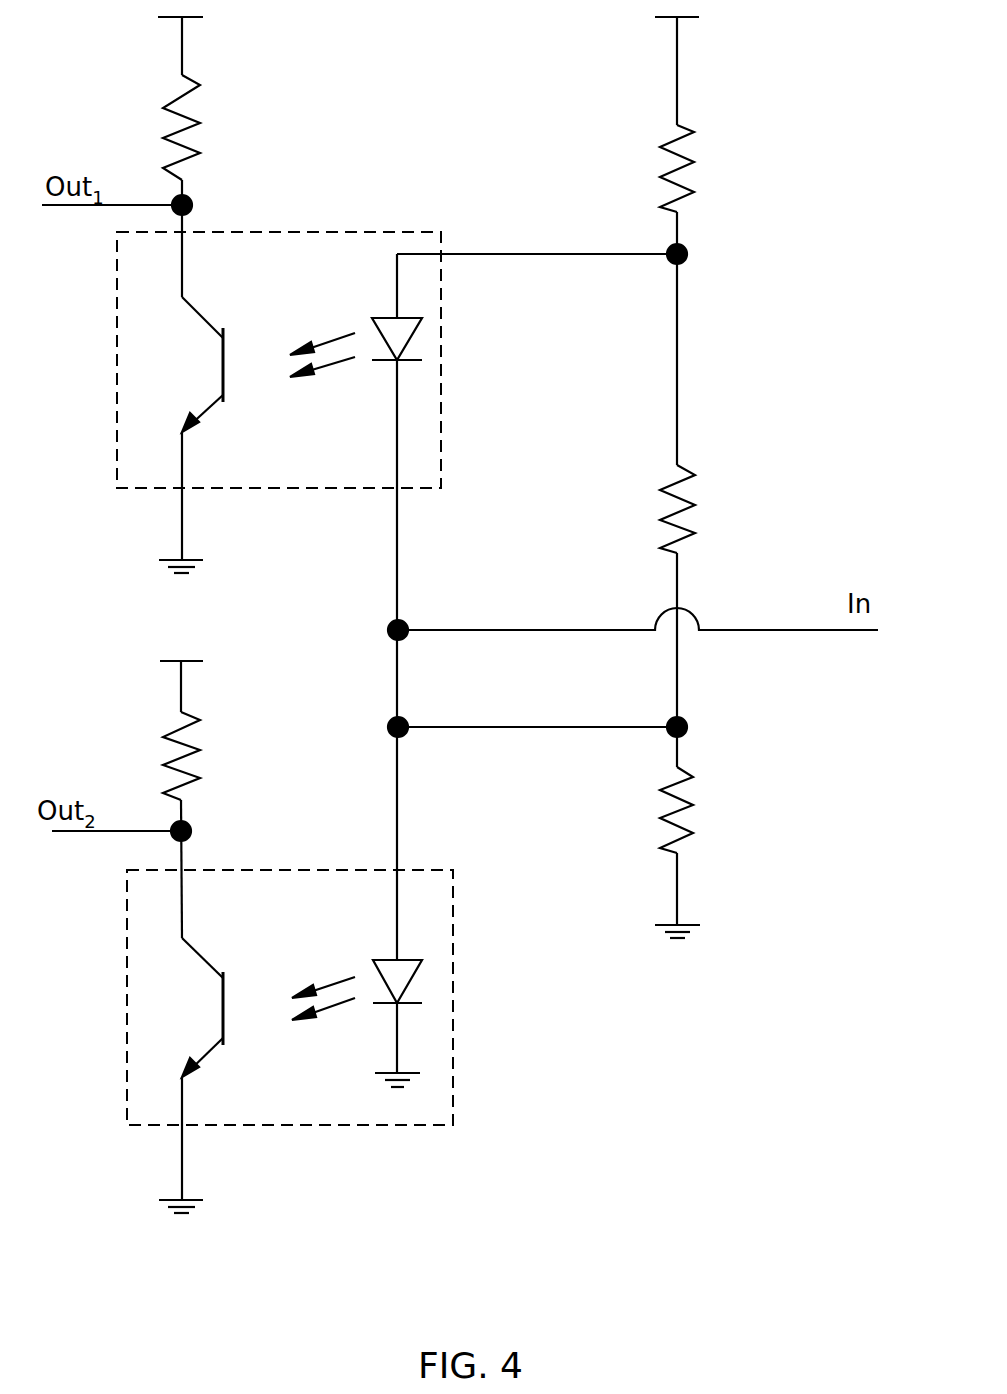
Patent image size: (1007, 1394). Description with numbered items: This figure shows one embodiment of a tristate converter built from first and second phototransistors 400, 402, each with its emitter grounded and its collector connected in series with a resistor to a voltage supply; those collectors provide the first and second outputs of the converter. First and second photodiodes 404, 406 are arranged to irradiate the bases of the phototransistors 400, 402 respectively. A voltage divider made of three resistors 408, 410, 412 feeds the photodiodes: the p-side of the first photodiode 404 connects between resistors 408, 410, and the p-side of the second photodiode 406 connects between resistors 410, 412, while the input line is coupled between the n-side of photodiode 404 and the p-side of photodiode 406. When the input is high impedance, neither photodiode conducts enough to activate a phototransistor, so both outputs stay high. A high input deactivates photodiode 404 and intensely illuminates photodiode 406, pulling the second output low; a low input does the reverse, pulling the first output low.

The first phototransistor 400 is at (138, 360).
The second phototransistor 402 is at (138, 1033).
The first photodiode 404 is at (425, 337).
The second photodiode 406 is at (420, 982).
The resistor 408 is at (710, 180).
The resistor 410 is at (708, 512).
The resistor 412 is at (715, 810).